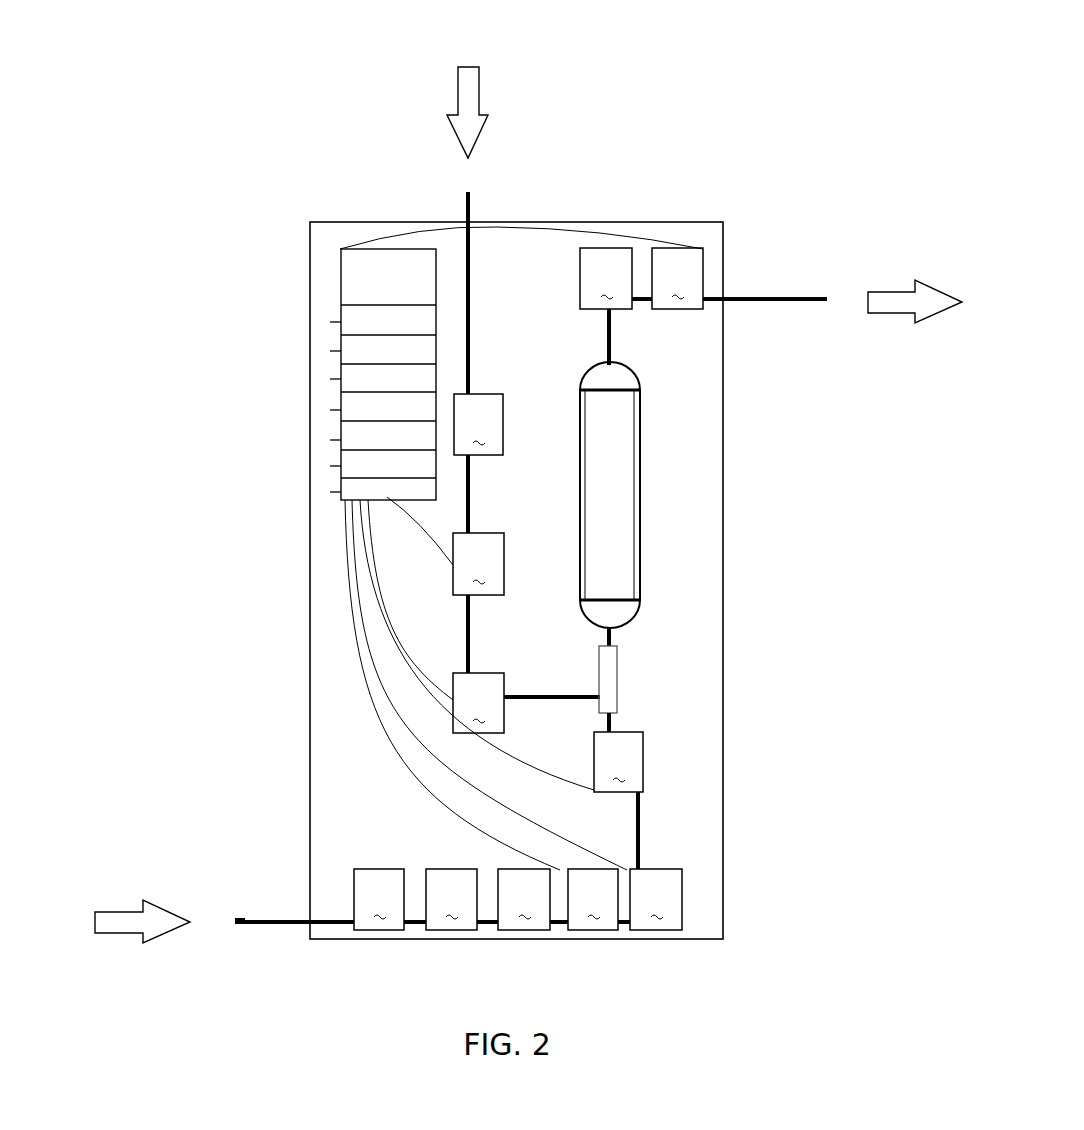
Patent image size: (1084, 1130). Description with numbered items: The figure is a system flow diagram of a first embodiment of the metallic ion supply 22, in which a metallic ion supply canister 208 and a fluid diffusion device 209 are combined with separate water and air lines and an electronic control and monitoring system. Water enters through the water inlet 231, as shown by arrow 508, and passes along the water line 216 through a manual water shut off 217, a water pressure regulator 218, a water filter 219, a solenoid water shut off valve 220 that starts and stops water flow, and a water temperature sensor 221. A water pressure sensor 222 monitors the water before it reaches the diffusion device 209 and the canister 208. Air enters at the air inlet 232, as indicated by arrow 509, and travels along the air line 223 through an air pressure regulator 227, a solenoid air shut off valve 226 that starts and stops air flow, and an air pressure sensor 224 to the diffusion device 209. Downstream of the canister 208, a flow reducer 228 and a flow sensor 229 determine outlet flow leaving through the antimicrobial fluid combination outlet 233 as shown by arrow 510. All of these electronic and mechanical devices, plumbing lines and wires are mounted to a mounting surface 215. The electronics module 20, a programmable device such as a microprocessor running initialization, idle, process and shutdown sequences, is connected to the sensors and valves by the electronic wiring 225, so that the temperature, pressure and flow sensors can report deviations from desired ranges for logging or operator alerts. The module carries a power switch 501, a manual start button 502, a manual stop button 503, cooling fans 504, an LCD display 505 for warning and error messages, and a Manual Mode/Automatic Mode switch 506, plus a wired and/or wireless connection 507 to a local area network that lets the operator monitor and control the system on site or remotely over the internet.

The electronics module 20 is at (396, 298).
The metallic ion supply 22 is at (310, 650).
The metallic ion supply canister 208 is at (648, 508).
The fluid diffusion device 209 is at (620, 670).
The mounting surface 215 is at (395, 853).
The water line 216 is at (267, 920).
The manual water shut off 217 is at (379, 899).
The water pressure regulator 218 is at (451, 899).
The water filter 219 is at (524, 899).
The solenoid water shut off valve 220 is at (593, 899).
The water temperature sensor 221 is at (656, 899).
The water pressure sensor 222 is at (618, 800).
The air line 223 is at (470, 345).
The air pressure sensor 224 is at (526, 703).
The electronic wiring 225 is at (377, 743).
The solenoid air shut off valve 226 is at (478, 564).
The air pressure regulator 227 is at (478, 424).
The flow reducer 228 is at (616, 278).
The flow sensor 229 is at (677, 278).
The water inlet 231 is at (235, 922).
The air inlet 232 is at (468, 192).
The antimicrobial fluid combination outlet 233 is at (827, 299).
The power switch 501 is at (341, 322).
The manual start button 502 is at (341, 351).
The manual stop button 503 is at (341, 379).
The cooling fans 504 is at (341, 410).
The LCD display 505 is at (341, 440).
The Manual Mode/Automatic Mode switch 506 is at (341, 466).
The wired and/or wireless connection 507 is at (341, 492).
The arrow 508 is at (122, 908).
The arrow 509 is at (482, 90).
The arrow 510 is at (893, 292).